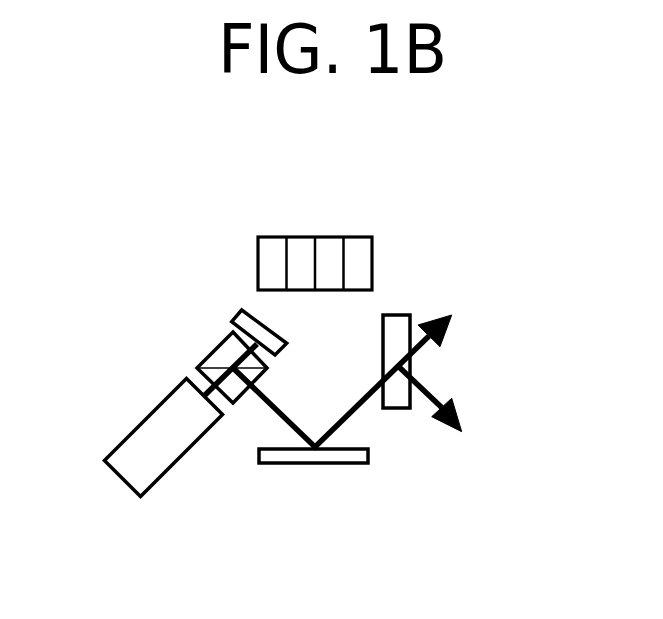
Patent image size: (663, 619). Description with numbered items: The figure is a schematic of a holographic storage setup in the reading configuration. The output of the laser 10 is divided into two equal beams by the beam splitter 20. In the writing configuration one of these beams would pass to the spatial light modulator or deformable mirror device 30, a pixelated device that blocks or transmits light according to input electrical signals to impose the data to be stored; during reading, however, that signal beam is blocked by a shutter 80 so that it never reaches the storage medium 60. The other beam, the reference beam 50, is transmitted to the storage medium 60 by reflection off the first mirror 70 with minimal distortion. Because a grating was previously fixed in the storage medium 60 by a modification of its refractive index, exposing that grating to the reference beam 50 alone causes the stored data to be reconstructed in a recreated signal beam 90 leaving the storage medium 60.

The laser 10 is at (180, 457).
The beam splitter 20 is at (213, 348).
The spatial light modulator or deformable mirror device 30 is at (325, 237).
The reference beam 50 is at (357, 407).
The storage medium 60 is at (393, 317).
The first mirror 70 is at (313, 462).
The shutter 80 is at (237, 312).
The recreated signal beam 90 is at (460, 410).